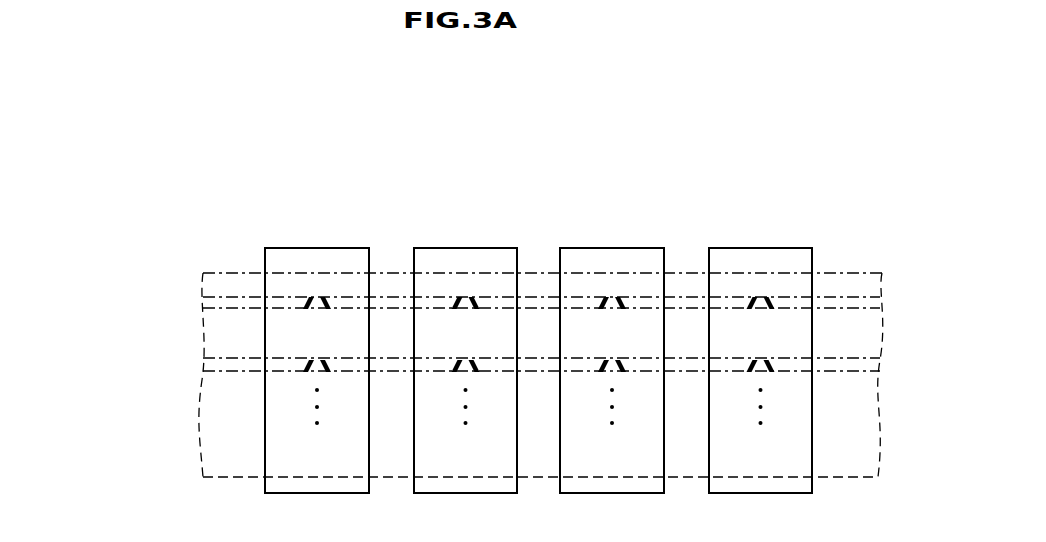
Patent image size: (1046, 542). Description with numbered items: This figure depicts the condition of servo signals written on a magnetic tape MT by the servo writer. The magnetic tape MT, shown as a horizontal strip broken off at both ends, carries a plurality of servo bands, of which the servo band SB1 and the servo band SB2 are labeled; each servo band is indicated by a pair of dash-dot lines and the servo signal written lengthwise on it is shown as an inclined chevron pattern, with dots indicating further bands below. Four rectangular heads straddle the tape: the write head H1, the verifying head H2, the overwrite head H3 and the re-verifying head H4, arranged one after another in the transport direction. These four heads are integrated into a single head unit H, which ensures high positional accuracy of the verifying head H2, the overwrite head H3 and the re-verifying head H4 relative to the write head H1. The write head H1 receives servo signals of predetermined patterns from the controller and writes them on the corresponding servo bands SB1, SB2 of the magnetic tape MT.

The head unit H is at (550, 179).
The write head H1 is at (317, 243).
The verifying head H2 is at (465, 243).
The overwrite head H3 is at (613, 243).
The re-verifying head H4 is at (749, 243).
The servo band SB1 is at (302, 313).
The servo band SB2 is at (302, 379).
The magnetic tape MT is at (847, 274).